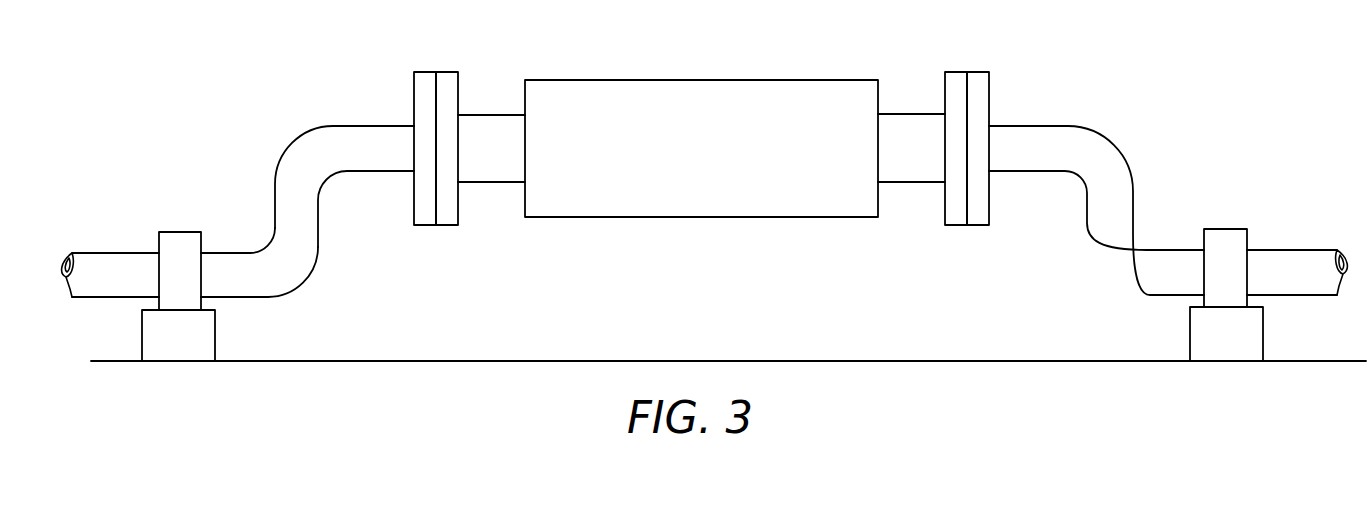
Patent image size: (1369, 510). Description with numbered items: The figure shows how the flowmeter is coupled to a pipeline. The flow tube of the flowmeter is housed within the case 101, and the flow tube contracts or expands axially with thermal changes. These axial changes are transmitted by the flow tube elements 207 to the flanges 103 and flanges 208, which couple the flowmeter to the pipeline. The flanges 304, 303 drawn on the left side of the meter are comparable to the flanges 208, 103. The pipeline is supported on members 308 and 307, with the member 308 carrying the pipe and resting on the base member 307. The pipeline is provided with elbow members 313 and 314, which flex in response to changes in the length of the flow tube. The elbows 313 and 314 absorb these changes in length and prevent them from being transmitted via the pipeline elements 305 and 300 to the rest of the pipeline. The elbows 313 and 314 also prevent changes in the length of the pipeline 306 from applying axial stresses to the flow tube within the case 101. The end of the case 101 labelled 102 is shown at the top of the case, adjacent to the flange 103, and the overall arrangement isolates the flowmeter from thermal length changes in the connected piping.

The case 101 is at (732, 175).
The first end of vessel 102 is at (757, 80).
The flange 103 is at (957, 72).
The flow tube element 207 is at (490, 173).
The flange 208 is at (982, 70).
The pipeline element 300 is at (1110, 103).
The flange 303 is at (457, 72).
The flange 304 is at (427, 72).
The pipeline element 305 is at (375, 140).
The pipeline 306 is at (93, 267).
The support member 307 is at (197, 342).
The support member 308 is at (173, 235).
The elbow member 313 is at (307, 155).
The elbow member 314 is at (293, 268).